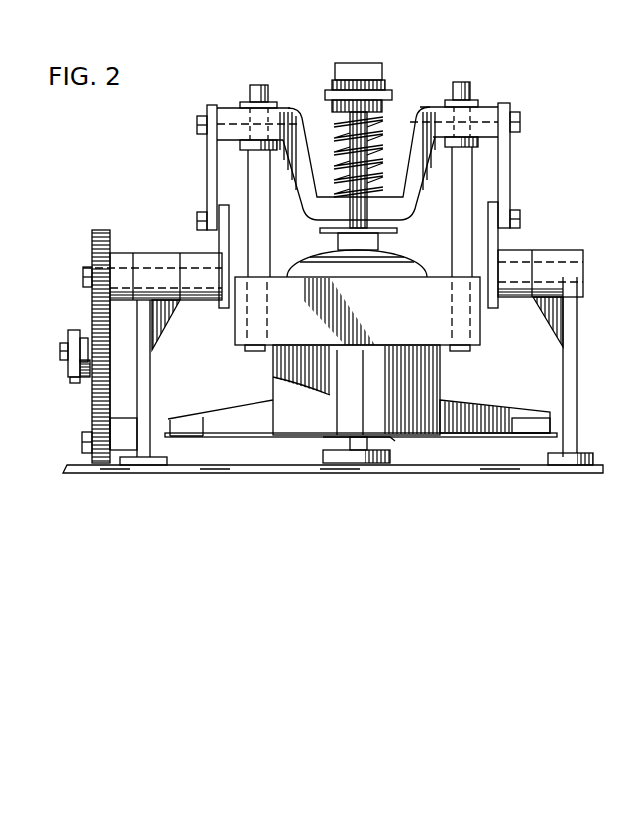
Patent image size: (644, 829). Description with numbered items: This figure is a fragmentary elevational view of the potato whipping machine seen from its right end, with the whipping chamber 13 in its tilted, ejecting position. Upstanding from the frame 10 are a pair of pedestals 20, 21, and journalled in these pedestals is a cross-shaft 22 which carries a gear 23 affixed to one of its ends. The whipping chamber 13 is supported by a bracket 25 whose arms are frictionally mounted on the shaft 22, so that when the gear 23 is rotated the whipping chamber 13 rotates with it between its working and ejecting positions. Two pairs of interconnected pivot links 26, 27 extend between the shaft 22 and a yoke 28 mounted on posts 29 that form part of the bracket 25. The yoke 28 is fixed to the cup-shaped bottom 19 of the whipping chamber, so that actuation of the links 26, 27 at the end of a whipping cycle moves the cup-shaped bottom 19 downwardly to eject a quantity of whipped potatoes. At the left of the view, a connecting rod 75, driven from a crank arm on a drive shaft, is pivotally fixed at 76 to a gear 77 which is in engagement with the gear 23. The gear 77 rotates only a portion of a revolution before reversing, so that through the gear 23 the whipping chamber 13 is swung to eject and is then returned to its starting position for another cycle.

The frame 10 is at (571, 476).
The whipping chamber 13 is at (447, 371).
The cup-shaped bottom 19 is at (404, 252).
The pedestal 20 is at (578, 321).
The pedestal 21 is at (146, 387).
The cross-shaft 22 is at (560, 261).
The gear 23 is at (103, 230).
The bracket 25 is at (360, 334).
The interconnected links 26 is at (223, 204).
The interconnected links 27 is at (207, 164).
The yoke 28 is at (421, 111).
The posts 29 is at (470, 80).
The connecting rod 75 is at (72, 380).
The pivot 76 is at (60, 350).
The gear 77 is at (92, 410).